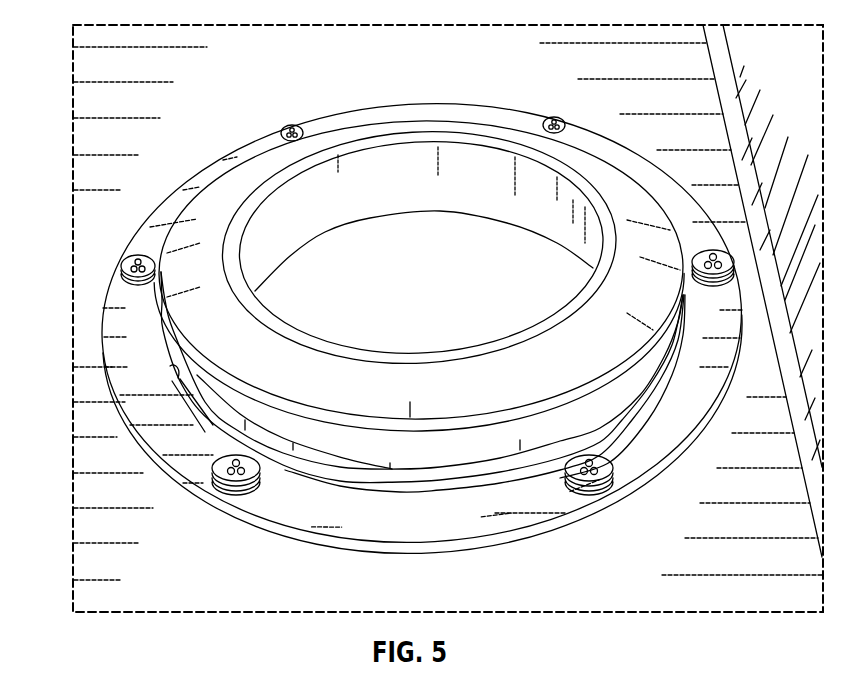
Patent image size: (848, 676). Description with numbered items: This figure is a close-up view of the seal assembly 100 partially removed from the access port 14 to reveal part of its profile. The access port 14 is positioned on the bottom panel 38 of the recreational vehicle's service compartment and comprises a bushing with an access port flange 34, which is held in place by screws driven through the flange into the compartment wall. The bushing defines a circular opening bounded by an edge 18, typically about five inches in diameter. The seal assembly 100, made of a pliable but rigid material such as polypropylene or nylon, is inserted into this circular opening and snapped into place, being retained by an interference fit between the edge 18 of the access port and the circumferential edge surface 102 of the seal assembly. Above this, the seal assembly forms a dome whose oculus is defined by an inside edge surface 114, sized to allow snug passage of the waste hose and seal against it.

The seal assembly 100 is at (447, 240).
The circumferential edge surface 102 is at (387, 457).
The inside edge surface 114 is at (408, 197).
The access port 14 is at (558, 530).
The access port flange 34 is at (358, 518).
The bottom panel 38 is at (708, 497).
The edge 18 is at (170, 366).